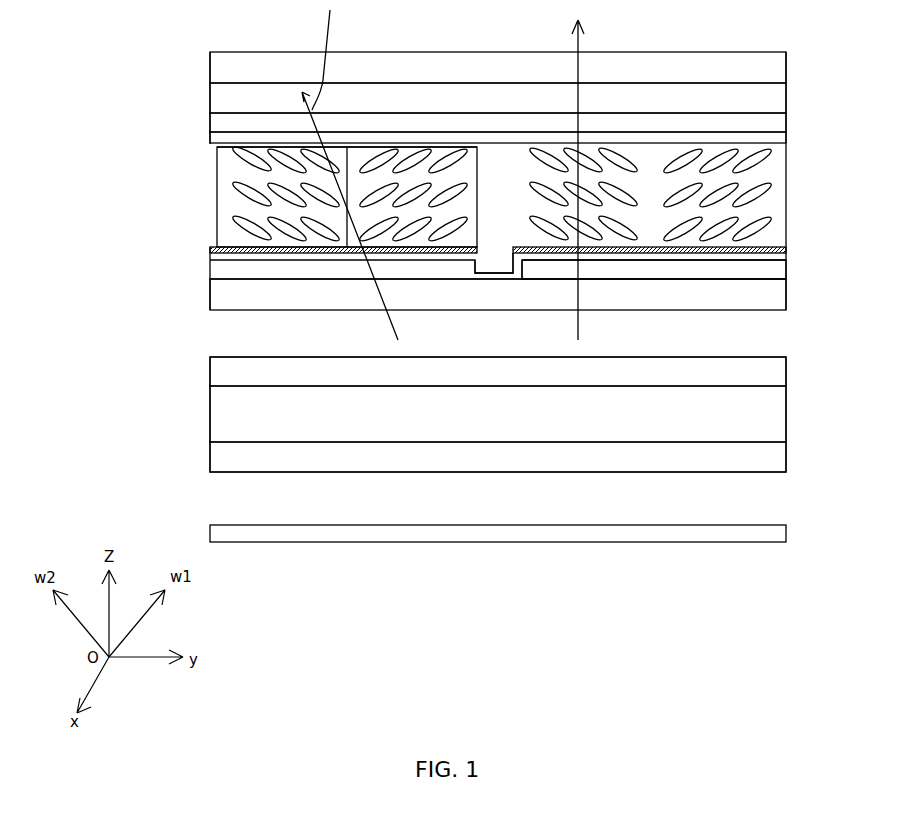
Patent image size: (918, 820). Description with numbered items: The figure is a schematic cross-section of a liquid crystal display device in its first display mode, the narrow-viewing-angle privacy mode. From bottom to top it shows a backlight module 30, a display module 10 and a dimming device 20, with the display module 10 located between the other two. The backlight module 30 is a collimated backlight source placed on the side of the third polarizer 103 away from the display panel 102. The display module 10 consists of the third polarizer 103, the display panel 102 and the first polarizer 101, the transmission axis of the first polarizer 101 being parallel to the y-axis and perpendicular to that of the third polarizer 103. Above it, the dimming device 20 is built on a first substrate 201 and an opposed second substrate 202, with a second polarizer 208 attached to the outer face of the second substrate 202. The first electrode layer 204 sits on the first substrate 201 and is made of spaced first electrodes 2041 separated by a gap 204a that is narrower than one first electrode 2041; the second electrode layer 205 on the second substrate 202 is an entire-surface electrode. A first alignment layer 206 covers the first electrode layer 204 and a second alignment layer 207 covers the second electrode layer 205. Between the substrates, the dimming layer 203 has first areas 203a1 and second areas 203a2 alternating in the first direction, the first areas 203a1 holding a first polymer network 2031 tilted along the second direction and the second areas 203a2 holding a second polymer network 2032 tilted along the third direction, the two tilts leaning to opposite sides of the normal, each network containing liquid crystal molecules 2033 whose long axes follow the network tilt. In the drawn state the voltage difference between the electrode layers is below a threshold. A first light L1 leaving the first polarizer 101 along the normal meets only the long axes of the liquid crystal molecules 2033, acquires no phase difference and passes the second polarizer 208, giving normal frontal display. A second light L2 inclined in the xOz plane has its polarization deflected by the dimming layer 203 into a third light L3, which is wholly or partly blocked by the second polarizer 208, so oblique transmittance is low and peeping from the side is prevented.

The display module 10 is at (200, 358).
The first polarizer 101 is at (760, 367).
The display panel 102 is at (760, 414).
The third polarizer 103 is at (760, 461).
The dimming device 20 is at (203, 53).
The first substrate 201 is at (760, 292).
The second substrate 202 is at (760, 93).
The dimming layer 203 is at (527, 137).
The first polymer network 2031 is at (403, 162).
The second polymer network 2032 is at (243, 158).
The liquid crystal molecules 2033 is at (377, 166).
The first area 203a1 is at (467, 150).
The second area 203a2 is at (266, 152).
The first electrode layer 204 is at (760, 268).
The gap 204a is at (501, 272).
The first electrode 2041 is at (645, 258).
The second electrode layer 205 is at (760, 120).
The first alignment layer 206 is at (760, 250).
The second alignment layer 207 is at (760, 136).
The second polarizer 208 is at (760, 63).
The backlight module 30 is at (218, 533).
The first light L1 is at (580, 321).
The second light L2 is at (392, 327).
The third light L3 is at (326, 55).